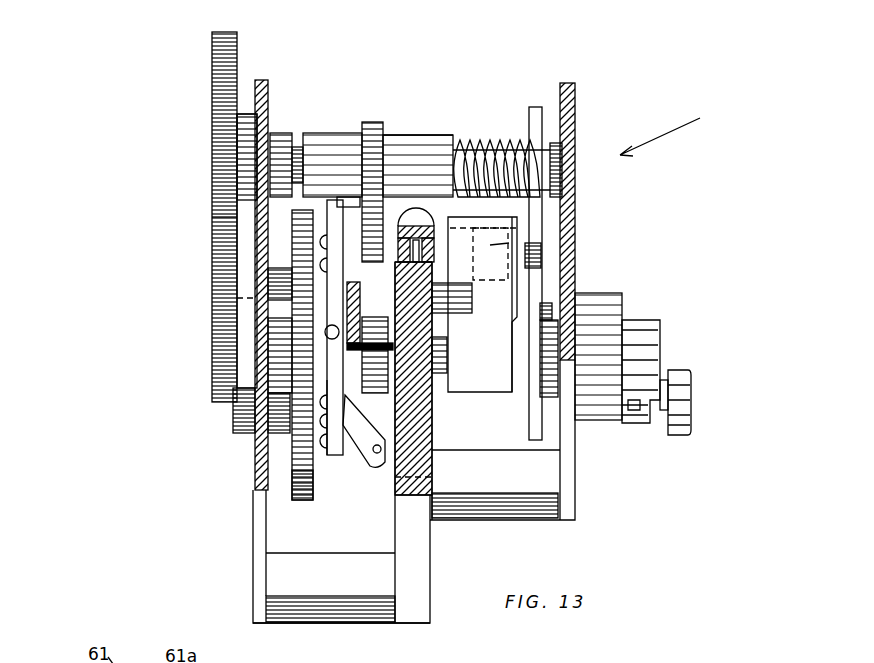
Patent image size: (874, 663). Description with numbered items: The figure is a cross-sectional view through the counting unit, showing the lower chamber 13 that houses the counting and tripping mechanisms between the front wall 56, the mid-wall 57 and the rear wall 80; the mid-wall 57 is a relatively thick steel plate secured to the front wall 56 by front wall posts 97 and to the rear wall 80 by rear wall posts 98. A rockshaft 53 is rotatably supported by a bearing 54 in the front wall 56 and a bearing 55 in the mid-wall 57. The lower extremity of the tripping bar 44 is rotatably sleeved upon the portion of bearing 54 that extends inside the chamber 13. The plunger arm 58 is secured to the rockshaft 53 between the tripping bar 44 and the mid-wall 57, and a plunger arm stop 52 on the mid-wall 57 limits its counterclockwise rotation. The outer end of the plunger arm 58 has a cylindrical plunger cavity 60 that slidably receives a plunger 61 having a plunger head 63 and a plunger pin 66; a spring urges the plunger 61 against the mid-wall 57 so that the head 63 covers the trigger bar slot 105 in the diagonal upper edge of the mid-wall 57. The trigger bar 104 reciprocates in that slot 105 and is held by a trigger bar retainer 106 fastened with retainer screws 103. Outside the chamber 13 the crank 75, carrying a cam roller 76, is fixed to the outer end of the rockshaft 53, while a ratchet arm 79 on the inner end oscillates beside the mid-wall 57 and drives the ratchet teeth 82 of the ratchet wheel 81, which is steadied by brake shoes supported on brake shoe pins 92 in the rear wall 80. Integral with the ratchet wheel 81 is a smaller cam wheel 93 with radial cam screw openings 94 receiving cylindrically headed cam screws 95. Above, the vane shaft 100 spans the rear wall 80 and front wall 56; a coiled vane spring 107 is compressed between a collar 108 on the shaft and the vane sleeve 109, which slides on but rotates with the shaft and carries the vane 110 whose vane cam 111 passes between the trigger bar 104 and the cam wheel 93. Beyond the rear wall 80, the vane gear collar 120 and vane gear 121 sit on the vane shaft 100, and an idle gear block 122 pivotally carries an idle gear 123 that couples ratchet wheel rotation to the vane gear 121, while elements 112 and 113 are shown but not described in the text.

The lower chamber 13 is at (671, 127).
The tripping bar 44 is at (537, 117).
The plunger arm stop 52 is at (462, 300).
The rockshaft 53 is at (441, 375).
The bearing 54 is at (595, 305).
The bearing 55 is at (450, 350).
The front wall 56 is at (563, 460).
The mid-wall 57 is at (415, 562).
The plunger arm 58 is at (500, 378).
The plunger cavity 60 is at (507, 243).
The plunger 61 is at (490, 245).
The plunger head 63 is at (460, 243).
The plunger pin 66 is at (541, 255).
The crank 75 is at (648, 330).
The cam roller 76 is at (676, 385).
The ratchet arm 79 is at (372, 462).
The rear wall 80 is at (262, 525).
The ratchet wheel 81 is at (281, 475).
The ratchet teeth 82 is at (305, 498).
The brake shoe pins 92 is at (262, 432).
The cam wheel 93 is at (337, 455).
The cam screw openings 94 is at (345, 280).
The cam screws 95 is at (338, 205).
The front wall posts 97 is at (510, 507).
The rear wall posts 98 is at (330, 607).
The vane shaft 100 is at (297, 145).
The retainer screws 103 is at (400, 180).
The trigger bar 104 is at (396, 185).
The trigger bar slot 105 is at (440, 265).
The trigger bar retainer 106 is at (416, 215).
The vane spring 107 is at (503, 140).
The collar 108 is at (555, 162).
The vane sleeve 109 is at (320, 145).
The vane 110 is at (372, 135).
The vane cam 111 is at (350, 200).
The pin 112 is at (430, 250).
The bracket 113 is at (410, 245).
The vane gear collar 120 is at (247, 120).
The vane gear 121 is at (228, 60).
The idle gear block 122 is at (235, 405).
The idle gear 123 is at (222, 345).